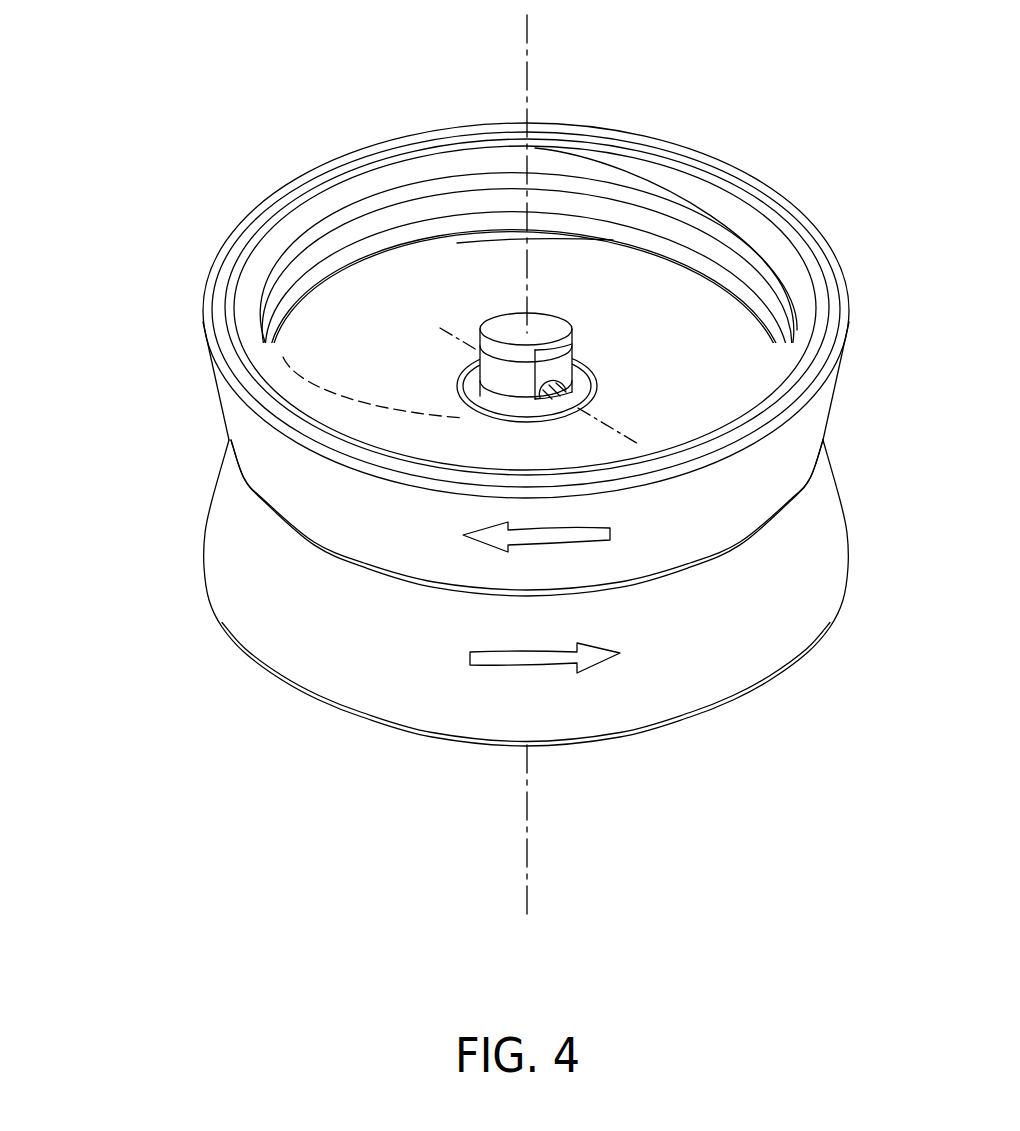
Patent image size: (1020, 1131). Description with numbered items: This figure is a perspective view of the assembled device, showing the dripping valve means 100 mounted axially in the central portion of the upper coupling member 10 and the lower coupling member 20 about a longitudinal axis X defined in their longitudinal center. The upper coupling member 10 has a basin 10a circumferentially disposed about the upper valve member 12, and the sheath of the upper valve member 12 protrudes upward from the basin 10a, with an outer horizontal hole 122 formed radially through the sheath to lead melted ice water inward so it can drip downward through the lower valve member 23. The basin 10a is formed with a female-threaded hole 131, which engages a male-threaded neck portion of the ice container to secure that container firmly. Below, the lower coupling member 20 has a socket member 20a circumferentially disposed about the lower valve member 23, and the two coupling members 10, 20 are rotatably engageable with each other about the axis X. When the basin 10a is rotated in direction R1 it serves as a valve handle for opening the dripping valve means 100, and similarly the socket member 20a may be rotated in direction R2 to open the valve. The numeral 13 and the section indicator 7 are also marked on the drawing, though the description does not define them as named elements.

The dripping valve means 100 is at (178, 150).
The upper coupling member 10 is at (690, 153).
The basin 10a is at (242, 423).
The upper valve member 12 is at (462, 368).
The outer horizontal hole 122 is at (573, 382).
The inner wall 13 is at (395, 220).
The female-threaded hole 131 is at (753, 240).
The lower coupling member 20 is at (282, 639).
The socket member 20a is at (755, 663).
The lower valve member 23 is at (288, 360).
The longitudinal axis X is at (527, 73).
The rotation direction of upper coupling member R1 is at (480, 533).
The rotation direction of lower coupling member R2 is at (558, 663).
The section line 7- 7 is at (445, 312).